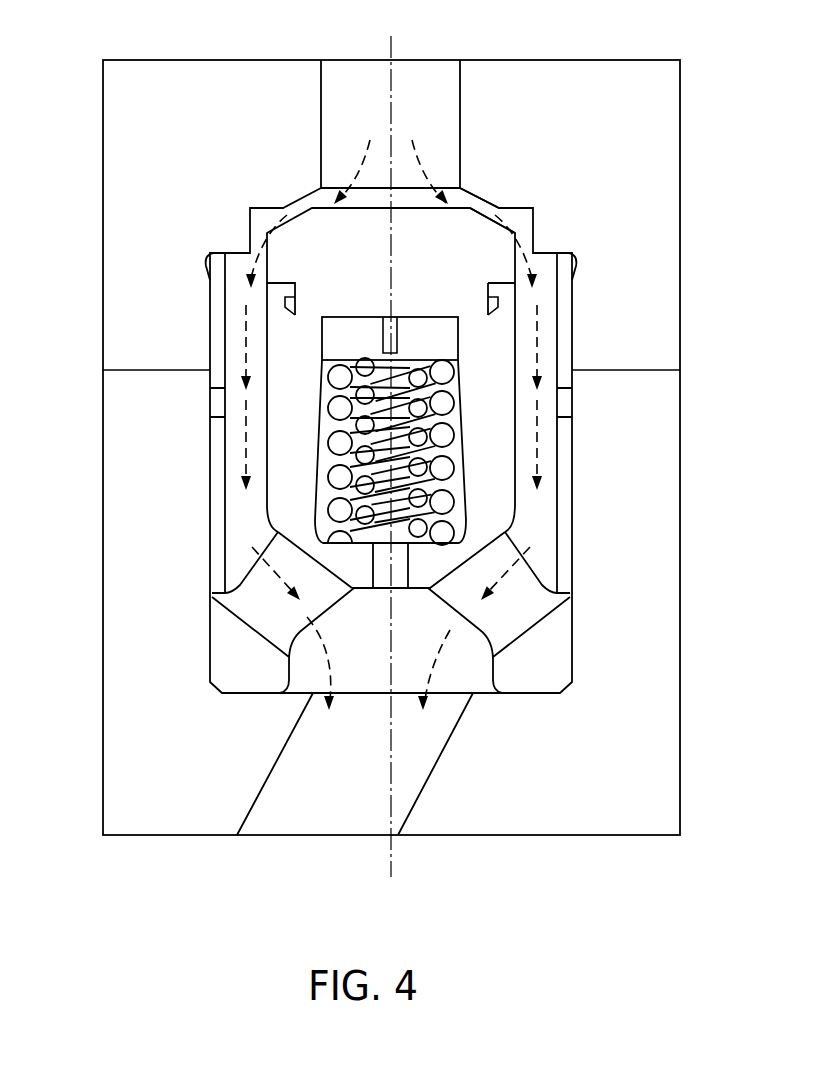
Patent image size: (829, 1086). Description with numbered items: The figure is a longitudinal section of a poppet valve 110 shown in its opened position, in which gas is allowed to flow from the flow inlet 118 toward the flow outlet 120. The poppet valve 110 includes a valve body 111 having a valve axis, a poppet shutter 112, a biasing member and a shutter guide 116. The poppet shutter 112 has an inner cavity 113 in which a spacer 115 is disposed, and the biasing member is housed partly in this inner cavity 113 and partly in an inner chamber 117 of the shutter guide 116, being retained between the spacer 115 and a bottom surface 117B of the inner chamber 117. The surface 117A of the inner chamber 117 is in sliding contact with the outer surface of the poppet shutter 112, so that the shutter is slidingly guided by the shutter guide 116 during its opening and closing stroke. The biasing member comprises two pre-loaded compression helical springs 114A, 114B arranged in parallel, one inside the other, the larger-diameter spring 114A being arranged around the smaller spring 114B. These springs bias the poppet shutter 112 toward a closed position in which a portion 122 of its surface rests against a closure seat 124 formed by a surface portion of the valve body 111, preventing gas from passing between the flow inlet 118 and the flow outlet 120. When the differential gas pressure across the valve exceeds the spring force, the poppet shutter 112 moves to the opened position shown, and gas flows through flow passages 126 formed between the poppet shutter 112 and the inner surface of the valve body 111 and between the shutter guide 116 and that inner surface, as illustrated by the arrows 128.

The poppet valve 110 is at (116, 36).
The valve body 111 is at (662, 120).
The poppet shutter 112 is at (372, 220).
The inner cavity 113 is at (325, 423).
The compression helical spring 114A is at (458, 465).
The compression helical spring 114B is at (452, 530).
The spacer 115 is at (362, 320).
The shutter guide 116 is at (507, 348).
The inner chamber 117 is at (325, 533).
The surface of the inner chamber 117A is at (318, 495).
The bottom surface of the inner chamber 117B is at (376, 550).
The flow inlet 118 is at (412, 84).
The flow outlet 120 is at (333, 815).
The portion of a surface of the poppet shutter 122 is at (485, 208).
The closure seat 124 is at (470, 200).
The flow passages 126 is at (545, 277).
The arrows 128 is at (548, 572).